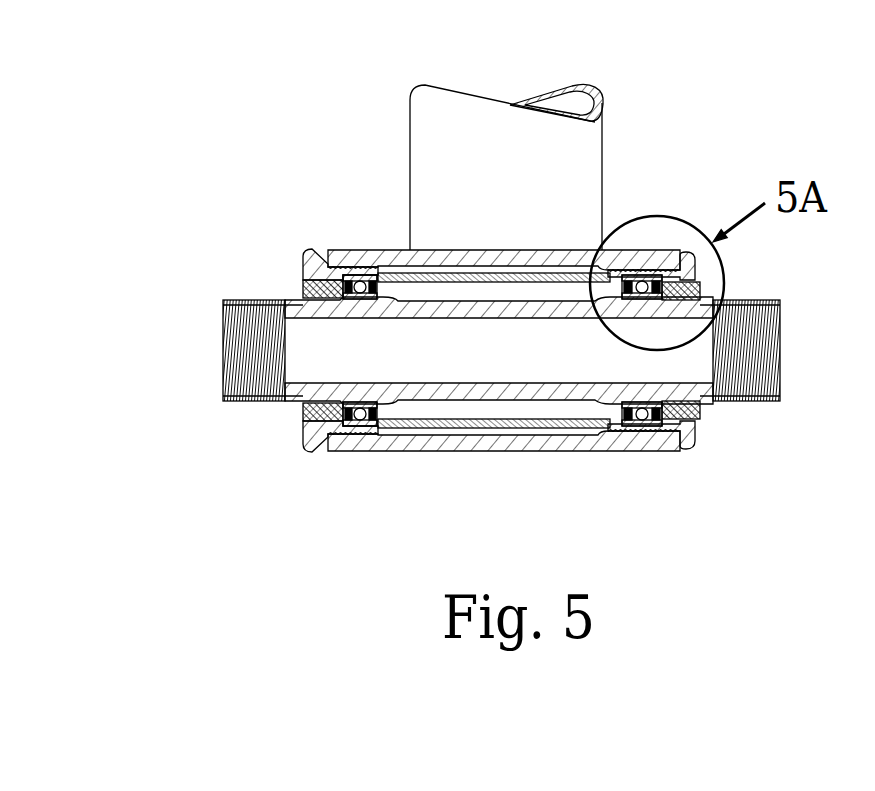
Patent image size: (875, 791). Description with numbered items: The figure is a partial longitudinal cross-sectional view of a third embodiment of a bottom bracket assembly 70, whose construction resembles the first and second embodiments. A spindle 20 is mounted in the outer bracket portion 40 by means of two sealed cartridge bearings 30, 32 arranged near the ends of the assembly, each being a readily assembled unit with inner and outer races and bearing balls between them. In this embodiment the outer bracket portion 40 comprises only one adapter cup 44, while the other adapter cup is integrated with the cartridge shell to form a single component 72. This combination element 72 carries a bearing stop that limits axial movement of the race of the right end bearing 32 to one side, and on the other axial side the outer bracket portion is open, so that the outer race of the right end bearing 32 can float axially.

The spindle 20 is at (453, 310).
The cartridge bearing 30 is at (359, 427).
The cartridge bearing 32 is at (641, 428).
The outer bracket portion 40 is at (279, 372).
The adapter cup 44 is at (307, 432).
The bottom bracket assembly 70 is at (305, 222).
The single component 72 is at (547, 428).